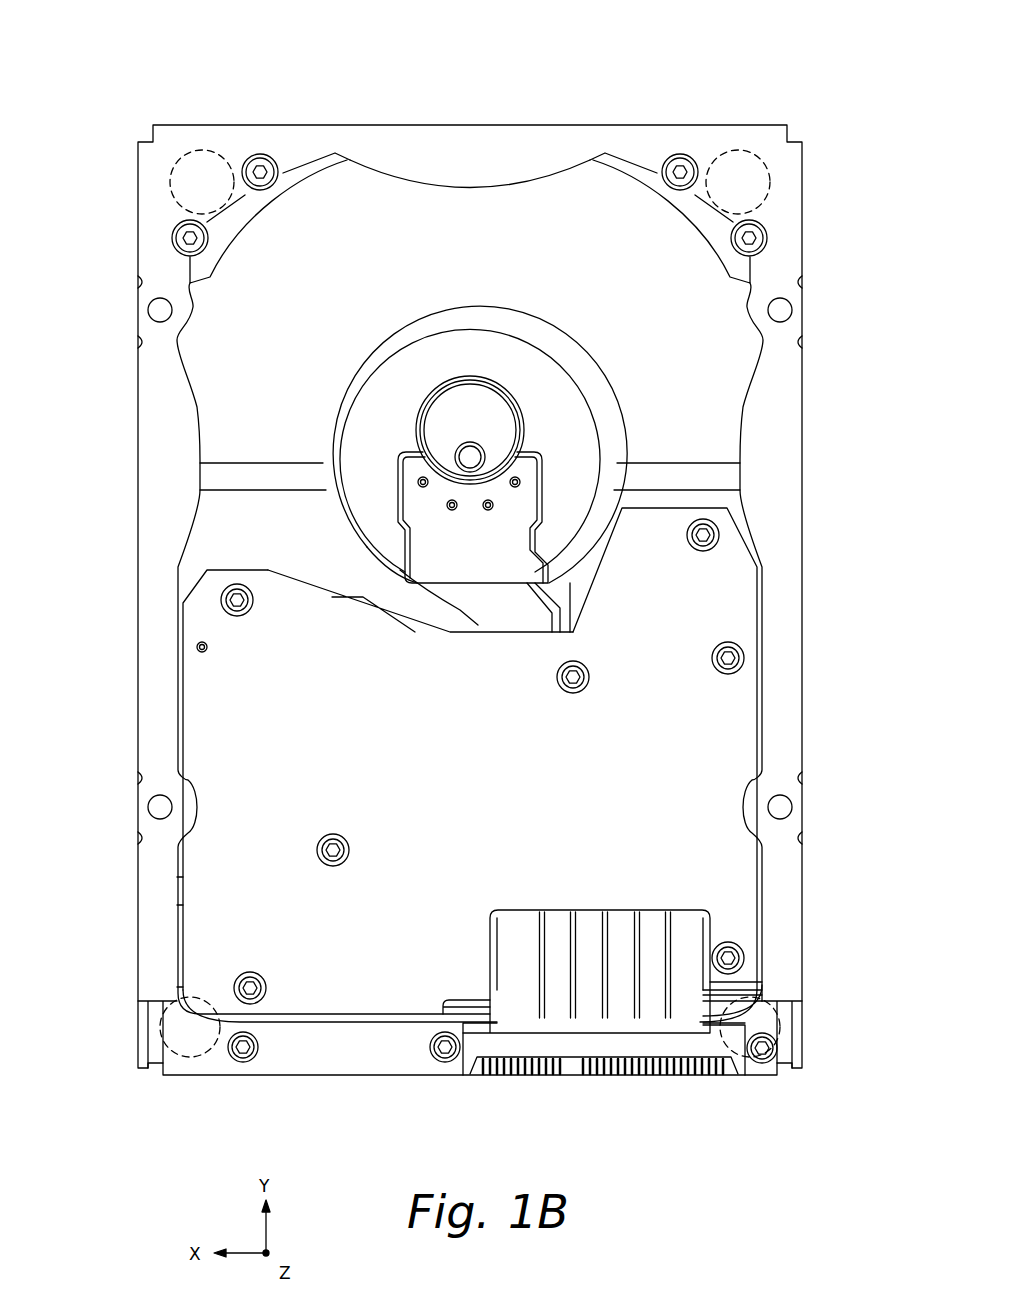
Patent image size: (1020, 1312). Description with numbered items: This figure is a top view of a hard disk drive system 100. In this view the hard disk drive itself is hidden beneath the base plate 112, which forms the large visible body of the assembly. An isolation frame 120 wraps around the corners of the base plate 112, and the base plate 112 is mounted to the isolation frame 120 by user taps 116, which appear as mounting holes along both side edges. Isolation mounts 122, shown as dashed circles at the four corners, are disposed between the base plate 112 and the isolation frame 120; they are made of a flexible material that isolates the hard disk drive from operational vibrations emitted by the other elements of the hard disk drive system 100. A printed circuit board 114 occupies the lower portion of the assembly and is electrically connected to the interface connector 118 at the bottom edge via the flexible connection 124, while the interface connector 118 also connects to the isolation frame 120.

The hard disk drive system 100 is at (157, 43).
The base plate 112 is at (720, 417).
The printed circuit board 114 is at (720, 730).
The user taps 116 is at (170, 313).
The interface connector 118 is at (563, 1078).
The isolation frame 120 is at (802, 507).
The isolation mounts 122 is at (202, 150).
The flexible connection 124 is at (624, 920).